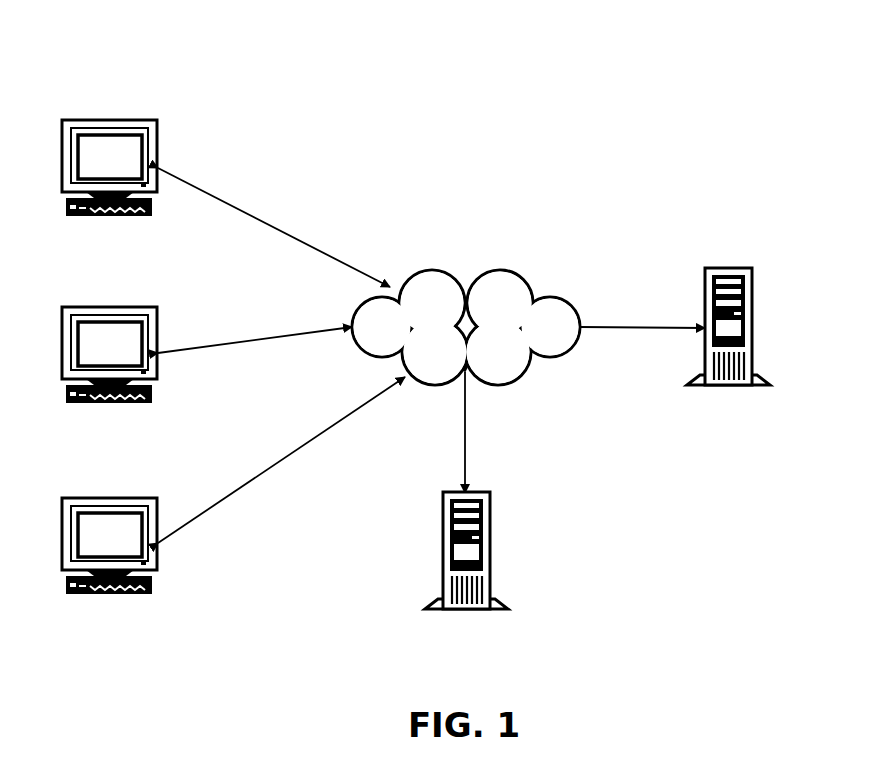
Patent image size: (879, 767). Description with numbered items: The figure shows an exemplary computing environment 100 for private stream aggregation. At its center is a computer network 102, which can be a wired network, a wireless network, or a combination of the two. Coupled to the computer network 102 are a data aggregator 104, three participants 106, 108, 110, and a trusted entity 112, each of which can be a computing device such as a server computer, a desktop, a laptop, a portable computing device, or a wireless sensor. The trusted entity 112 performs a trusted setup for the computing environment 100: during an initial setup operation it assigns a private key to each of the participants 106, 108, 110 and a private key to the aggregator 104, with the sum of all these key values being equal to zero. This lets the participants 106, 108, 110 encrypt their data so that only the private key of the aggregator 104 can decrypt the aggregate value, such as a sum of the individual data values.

The computing environment 100 is at (205, 87).
The computer network 102 is at (466, 327).
The data aggregator 104 is at (727, 353).
The participant 106 is at (108, 195).
The participant 108 is at (108, 381).
The participant 110 is at (108, 572).
The trusted entity 112 is at (464, 580).